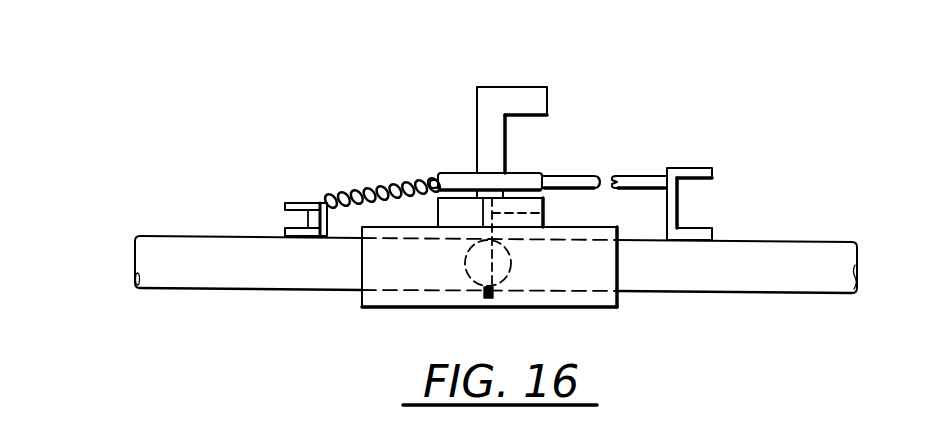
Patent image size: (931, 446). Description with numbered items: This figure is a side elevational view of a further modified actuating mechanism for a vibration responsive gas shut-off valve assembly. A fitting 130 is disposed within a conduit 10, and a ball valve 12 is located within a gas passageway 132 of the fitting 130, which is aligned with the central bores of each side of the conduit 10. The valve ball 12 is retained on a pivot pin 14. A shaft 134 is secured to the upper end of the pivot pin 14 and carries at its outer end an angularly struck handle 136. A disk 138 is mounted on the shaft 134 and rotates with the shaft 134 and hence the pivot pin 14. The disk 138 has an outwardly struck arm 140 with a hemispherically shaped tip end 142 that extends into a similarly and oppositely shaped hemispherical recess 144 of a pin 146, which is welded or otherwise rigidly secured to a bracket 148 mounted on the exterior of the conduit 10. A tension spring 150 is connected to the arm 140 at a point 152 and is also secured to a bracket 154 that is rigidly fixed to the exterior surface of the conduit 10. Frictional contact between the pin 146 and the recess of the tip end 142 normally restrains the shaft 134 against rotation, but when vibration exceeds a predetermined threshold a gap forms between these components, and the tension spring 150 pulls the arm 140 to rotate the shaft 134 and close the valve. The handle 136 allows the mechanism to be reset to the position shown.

The conduit 10 is at (766, 240).
The ball valve 12 is at (463, 270).
The pivot pin 14 is at (543, 205).
The fitting 130 is at (609, 307).
The gas passageway 132 is at (526, 291).
The shaft 134 is at (477, 146).
The handle 136 is at (525, 87).
The disk 138 is at (514, 174).
The arm 140 is at (600, 175).
The tip end 142 is at (600, 189).
The recess 144 is at (652, 176).
The pin 146 is at (628, 176).
The bracket 148 is at (713, 172).
The tension spring 150 is at (377, 184).
The point 152 is at (561, 175).
The bracket 154 is at (285, 212).